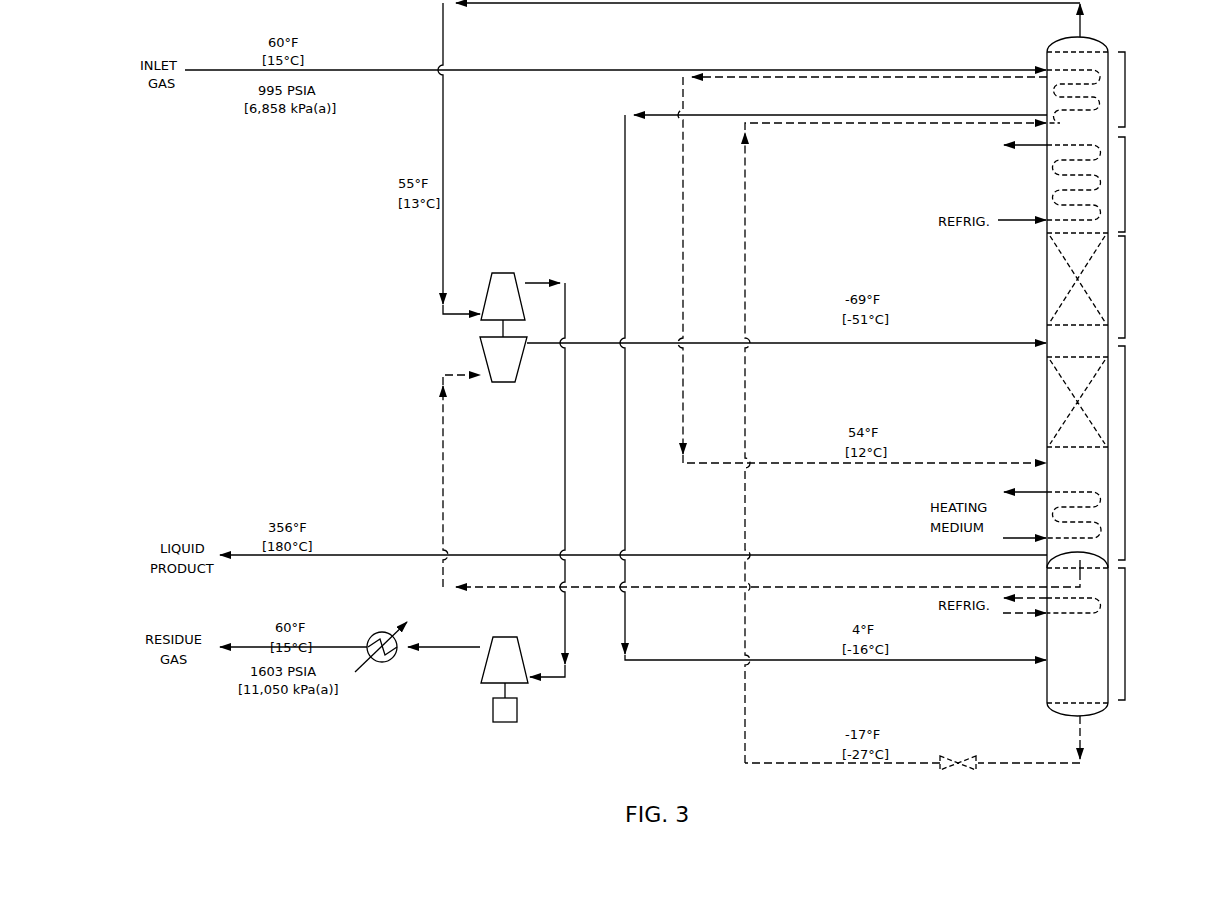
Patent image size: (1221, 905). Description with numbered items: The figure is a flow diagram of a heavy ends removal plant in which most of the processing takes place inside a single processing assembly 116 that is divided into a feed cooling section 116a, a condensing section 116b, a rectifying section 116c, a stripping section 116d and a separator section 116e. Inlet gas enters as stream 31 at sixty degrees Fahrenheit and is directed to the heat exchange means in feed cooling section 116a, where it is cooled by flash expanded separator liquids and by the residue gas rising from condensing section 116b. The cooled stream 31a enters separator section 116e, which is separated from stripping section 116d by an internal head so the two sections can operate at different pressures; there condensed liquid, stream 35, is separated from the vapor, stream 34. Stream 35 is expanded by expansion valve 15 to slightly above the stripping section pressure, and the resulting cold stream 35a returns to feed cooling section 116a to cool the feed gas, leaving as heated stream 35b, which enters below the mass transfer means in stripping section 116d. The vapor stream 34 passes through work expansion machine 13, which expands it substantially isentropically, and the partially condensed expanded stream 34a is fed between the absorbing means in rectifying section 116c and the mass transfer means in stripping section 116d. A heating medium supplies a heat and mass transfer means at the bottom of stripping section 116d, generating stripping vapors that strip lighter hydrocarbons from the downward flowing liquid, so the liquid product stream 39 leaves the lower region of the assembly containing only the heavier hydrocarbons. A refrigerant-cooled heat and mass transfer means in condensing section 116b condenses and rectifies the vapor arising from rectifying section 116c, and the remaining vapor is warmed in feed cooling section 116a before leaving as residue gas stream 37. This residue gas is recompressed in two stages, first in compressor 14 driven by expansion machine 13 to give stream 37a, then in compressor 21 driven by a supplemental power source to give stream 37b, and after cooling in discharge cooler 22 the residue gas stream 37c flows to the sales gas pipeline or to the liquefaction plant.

The inlet gas stream 31 is at (212, 70).
The residue gas stream 37 is at (445, 192).
The compressor 14 is at (509, 266).
The work expansion machine 13 is at (503, 384).
The residue gas stream 37a is at (568, 464).
The expanded stream 34a is at (866, 346).
The vapor stream 34 is at (446, 463).
The liquid product stream 39 is at (292, 560).
The cooled stream 31a is at (866, 664).
The heated liquid stream 35b is at (866, 467).
The condensed liquid stream 35 is at (1025, 767).
The expansion valve 15 is at (962, 757).
The flash expanded separator liquids 35a is at (866, 766).
The residue gas stream 37b is at (453, 646).
The residue gas stream 37c is at (262, 646).
The discharge cooler 22 is at (394, 662).
The compressor 21 is at (503, 636).
The processing assembly 116 is at (1045, 283).
The feed cooling section 116a is at (1127, 72).
The condensing section 116b is at (1127, 186).
The rectifying section 116c is at (1127, 286).
The stripping section 116d is at (1127, 459).
The separator section 116e is at (1127, 639).